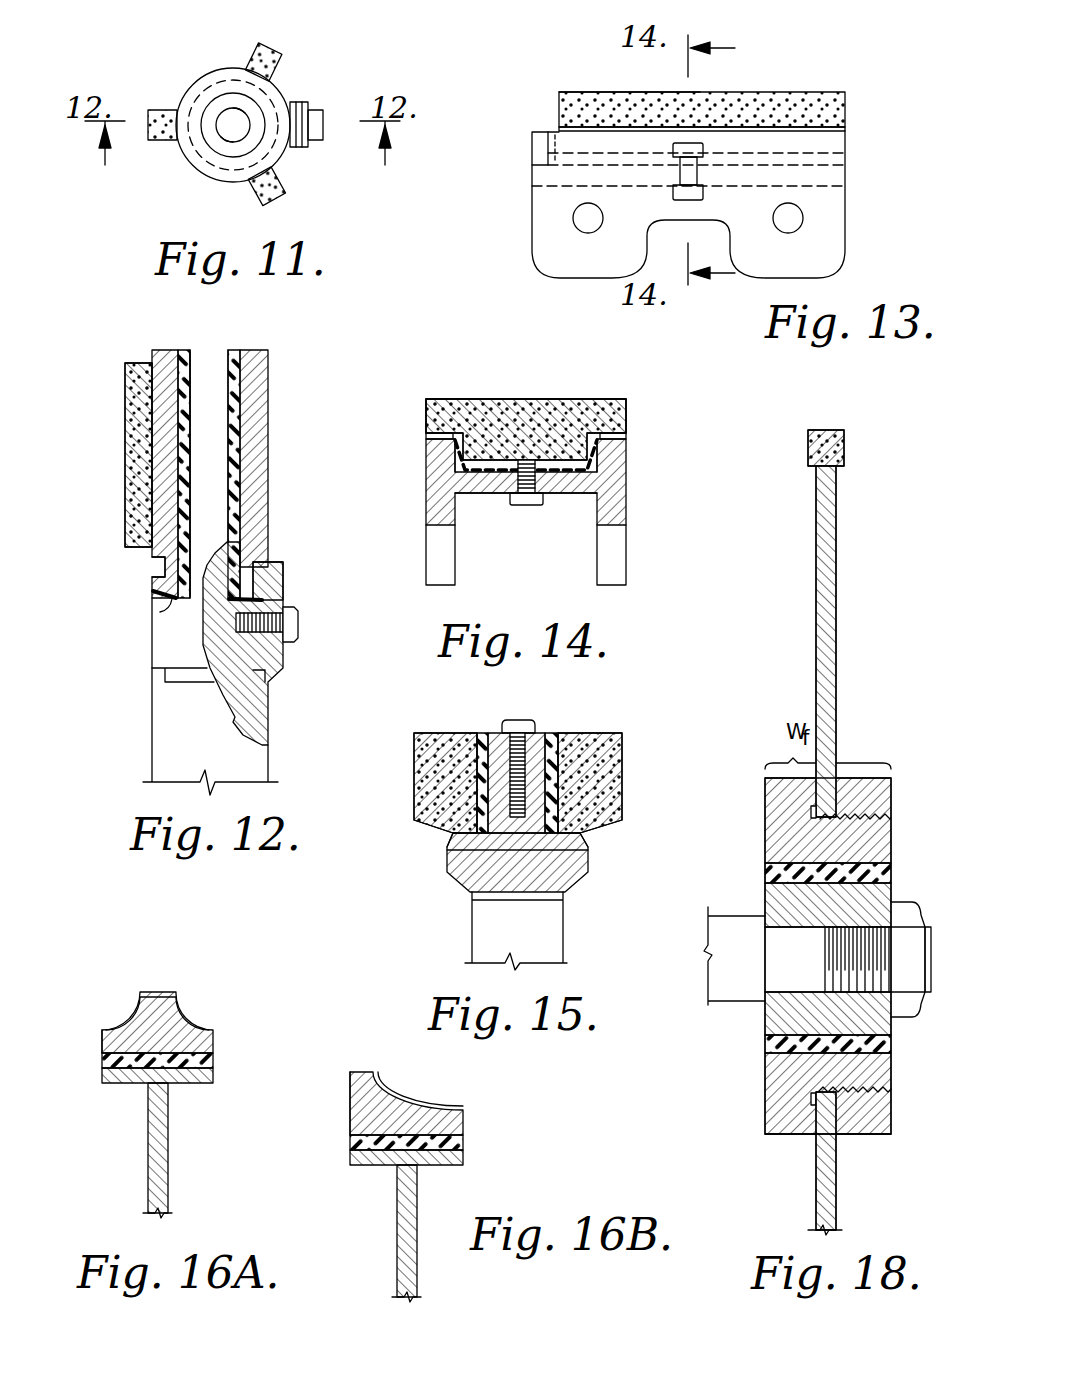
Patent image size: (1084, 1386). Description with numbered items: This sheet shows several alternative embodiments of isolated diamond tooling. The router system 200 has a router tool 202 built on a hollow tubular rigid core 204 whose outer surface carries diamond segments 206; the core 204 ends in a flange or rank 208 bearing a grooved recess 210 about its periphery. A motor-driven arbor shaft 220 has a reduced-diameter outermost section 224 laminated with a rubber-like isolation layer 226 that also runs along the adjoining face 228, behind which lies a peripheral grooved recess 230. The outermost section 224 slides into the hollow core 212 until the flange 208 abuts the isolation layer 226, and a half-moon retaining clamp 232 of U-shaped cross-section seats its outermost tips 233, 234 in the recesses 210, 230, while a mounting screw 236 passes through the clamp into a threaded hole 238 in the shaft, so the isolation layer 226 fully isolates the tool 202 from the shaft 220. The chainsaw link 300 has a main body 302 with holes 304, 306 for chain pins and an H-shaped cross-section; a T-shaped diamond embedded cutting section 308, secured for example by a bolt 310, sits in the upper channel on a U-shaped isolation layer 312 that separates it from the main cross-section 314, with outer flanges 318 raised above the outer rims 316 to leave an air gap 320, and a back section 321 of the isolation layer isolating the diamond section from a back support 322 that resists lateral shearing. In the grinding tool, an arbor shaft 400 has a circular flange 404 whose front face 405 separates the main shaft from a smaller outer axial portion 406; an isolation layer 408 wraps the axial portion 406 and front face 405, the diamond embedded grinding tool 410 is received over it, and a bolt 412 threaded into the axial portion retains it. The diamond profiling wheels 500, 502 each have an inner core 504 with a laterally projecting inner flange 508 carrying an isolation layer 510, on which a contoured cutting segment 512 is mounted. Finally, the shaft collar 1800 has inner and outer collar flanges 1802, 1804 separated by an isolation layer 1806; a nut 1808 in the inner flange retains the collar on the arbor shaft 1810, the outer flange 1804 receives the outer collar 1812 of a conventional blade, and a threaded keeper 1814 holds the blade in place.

In FIG. 11, the router system 200 is at (195, 56).
In FIG. 12, the router system 200 is at (122, 418).
In FIG. 11, the router tool 202 is at (283, 154).
In FIG. 12, the router tool 202 is at (268, 400).
In FIG. 11, the hollow tubular rigid core 204 is at (205, 158).
In FIG. 12, the hollow tubular rigid core 204 is at (160, 350).
In FIG. 11, the diamond segments 206 is at (282, 190).
In FIG. 12, the diamond segments 206 is at (132, 487).
In FIG. 12, the flange/rank 208 is at (150, 597).
In FIG. 12, the grooved recess 210 is at (152, 566).
In FIG. 11, the hollow core 212 is at (210, 98).
In FIG. 12, the hollow core 212 is at (205, 368).
In FIG. 12, the arbor shaft 220 is at (177, 741).
In FIG. 11, the outermost section 224 is at (233, 110).
In FIG. 12, the outermost section 224 is at (222, 360).
In FIG. 11, the isolation layer 226 is at (231, 142).
In FIG. 12, the isolation layer 226 is at (185, 352).
In FIG. 12, the adjoining face 228 is at (168, 603).
In FIG. 12, the grooved recess 230 is at (160, 676).
In FIG. 12, the retaining clamp 232 is at (284, 670).
In FIG. 12, the outermost tip 233 is at (260, 679).
In FIG. 12, the outermost tip 234 is at (260, 565).
In FIG. 11, the mounting screw 236 is at (318, 115).
In FIG. 12, the mounting screw 236 is at (299, 621).
In FIG. 12, the hole 238 is at (266, 632).
In FIG. 13, the chainsaw link 300 is at (607, 70).
In FIG. 14, the chainsaw link 300 is at (495, 385).
In FIG. 13, the main body 302 is at (838, 198).
In FIG. 14, the main body 302 is at (440, 520).
In FIG. 13, the hole 304 is at (796, 220).
In FIG. 13, the hole 306 is at (588, 228).
In FIG. 13, the diamond embedded cutting section 308 is at (600, 96).
In FIG. 14, the diamond embedded cutting section 308 is at (548, 400).
In FIG. 14, the bolt 310 is at (530, 506).
In FIG. 13, the isolation layer 312 is at (565, 160).
In FIG. 14, the isolation layer 312 is at (590, 472).
In FIG. 13, the main cross-section 314 is at (545, 181).
In FIG. 14, the main cross-section 314 is at (478, 495).
In FIG. 14, the outer rims 316 is at (430, 450).
In FIG. 14, the outer flanges 318 is at (430, 400).
In FIG. 13, the air gap 320 is at (846, 130).
In FIG. 14, the air gap 320 is at (428, 437).
In FIG. 13, the back section 321 is at (555, 135).
In FIG. 13, the back support 322 is at (532, 135).
In FIG. 15, the arbor shaft 400 is at (547, 928).
In FIG. 15, the circular flange 404 is at (475, 870).
In FIG. 15, the front face 405 is at (458, 850).
In FIG. 15, the outer axial portion 406 is at (495, 745).
In FIG. 15, the isolation layer 408 is at (552, 748).
In FIG. 15, the diamond embedded grinding tool 410 is at (428, 790).
In FIG. 15, the bolt 412 is at (520, 722).
In FIG. 16A, the diamond profiling wheel 500 is at (230, 1030).
In FIG. 16B, the diamond profiling wheel 502 is at (438, 1097).
In FIG. 16A, the inner core 504 is at (163, 1118).
In FIG. 16B, the inner core 504 is at (405, 1233).
In FIG. 16A, the inner flange 508 is at (128, 1085).
In FIG. 16B, the inner flange 508 is at (378, 1168).
In FIG. 16A, the isolation layer 510 is at (206, 1062).
In FIG. 16B, the isolation layer 510 is at (456, 1145).
In FIG. 16A, the cutting segment 512 is at (145, 1000).
In FIG. 16B, the cutting segment 512 is at (365, 1118).
In FIG. 18, the shaft collar 1800 is at (762, 814).
In FIG. 18, the inner collar flange 1802 is at (777, 1017).
In FIG. 18, the outer collar flange 1804 is at (783, 1095).
In FIG. 18, the isolation layer 1806 is at (772, 1042).
In FIG. 18, the nut 1808 is at (912, 914).
In FIG. 18, the arbor shaft 1810 is at (747, 929).
In FIG. 18, the outer collar 1812 is at (825, 1184).
In FIG. 18, the keeper 1814 is at (871, 1131).